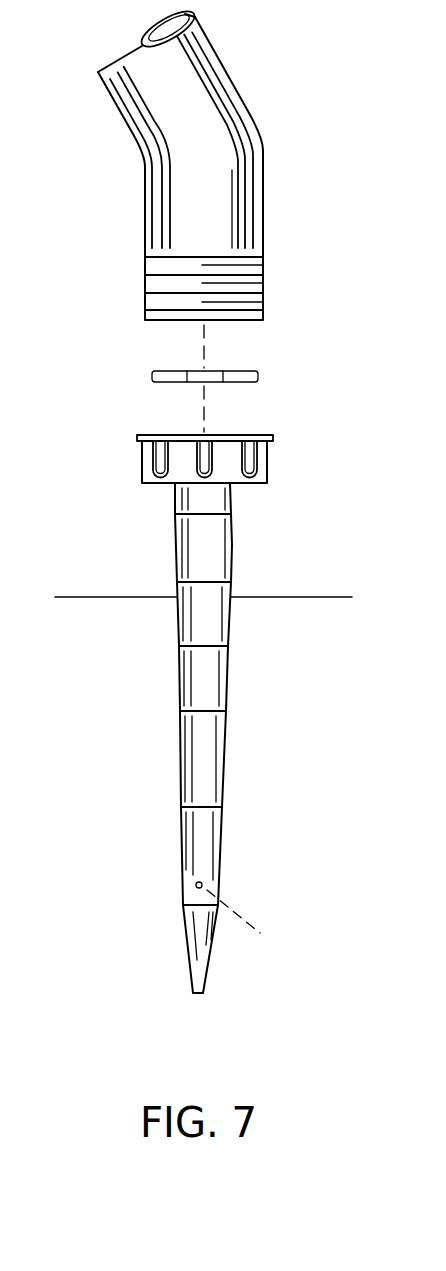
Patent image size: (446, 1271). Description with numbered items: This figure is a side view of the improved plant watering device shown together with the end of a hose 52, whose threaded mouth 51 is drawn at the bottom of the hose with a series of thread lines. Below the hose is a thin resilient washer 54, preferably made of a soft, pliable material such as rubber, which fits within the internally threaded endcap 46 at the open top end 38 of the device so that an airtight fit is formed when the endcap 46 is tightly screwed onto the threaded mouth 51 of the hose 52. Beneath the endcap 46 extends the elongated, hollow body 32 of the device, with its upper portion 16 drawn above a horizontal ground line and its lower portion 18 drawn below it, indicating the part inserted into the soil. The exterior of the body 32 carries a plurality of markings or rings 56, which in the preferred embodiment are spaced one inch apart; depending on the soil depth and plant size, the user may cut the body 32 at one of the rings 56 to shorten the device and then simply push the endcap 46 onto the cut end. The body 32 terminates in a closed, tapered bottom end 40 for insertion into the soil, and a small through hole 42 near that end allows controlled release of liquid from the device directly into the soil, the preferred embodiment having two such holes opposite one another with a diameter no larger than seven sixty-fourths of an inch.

The hose 52 is at (265, 163).
The threaded mouth 51 is at (263, 290).
The resilient washer 54 is at (260, 378).
The threaded endcap 46 is at (270, 462).
The open top end 38 is at (233, 487).
The upper portion 16 is at (203, 760).
The elongated hollow body 32 is at (178, 673).
The rings 56 is at (224, 803).
The lower portion 18 is at (170, 842).
The through hole 42 is at (197, 887).
The tapered bottom end 40 is at (210, 970).